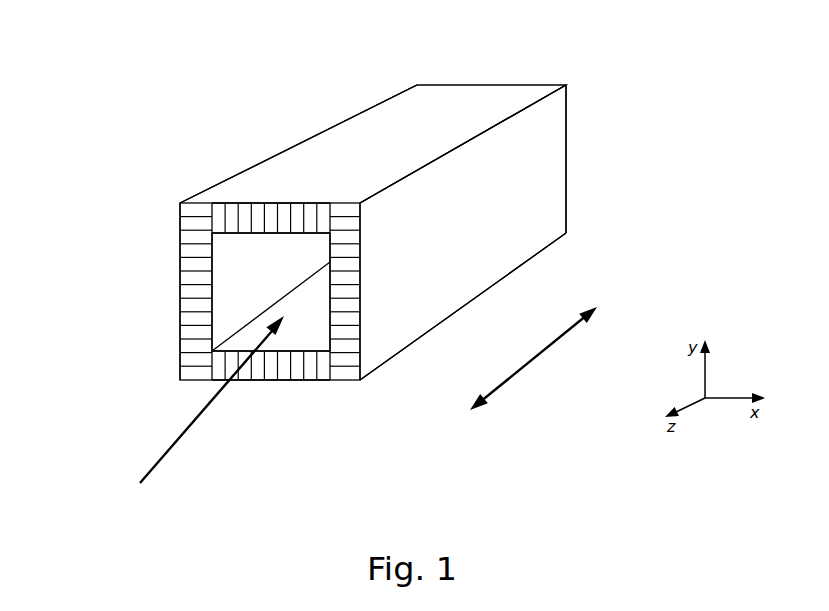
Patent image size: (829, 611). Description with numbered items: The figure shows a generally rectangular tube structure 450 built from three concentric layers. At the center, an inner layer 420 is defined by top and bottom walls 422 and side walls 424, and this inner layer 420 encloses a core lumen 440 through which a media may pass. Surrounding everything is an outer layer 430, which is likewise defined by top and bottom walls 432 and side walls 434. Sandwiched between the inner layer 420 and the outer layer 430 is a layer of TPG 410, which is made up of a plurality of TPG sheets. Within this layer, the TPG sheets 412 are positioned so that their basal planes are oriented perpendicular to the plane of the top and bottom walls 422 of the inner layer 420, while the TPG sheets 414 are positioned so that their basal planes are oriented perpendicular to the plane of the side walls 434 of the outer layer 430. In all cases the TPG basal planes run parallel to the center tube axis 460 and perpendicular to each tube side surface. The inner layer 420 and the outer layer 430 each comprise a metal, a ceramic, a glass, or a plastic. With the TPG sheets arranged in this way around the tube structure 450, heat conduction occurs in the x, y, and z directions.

The rectangular tube structure 450 is at (403, 255).
The layer of TPG 410 is at (392, 299).
The TPG sheets 412 is at (308, 210).
The TPG sheets 414 is at (343, 335).
The inner layer 420 is at (240, 305).
The top and bottom walls 422 is at (313, 313).
The side walls 424 is at (242, 262).
The outer layer 430 is at (464, 190).
The top and bottom walls 432 is at (403, 130).
The side walls 434 is at (522, 188).
The core lumen 440 is at (194, 412).
The center tube axis 460 is at (533, 358).